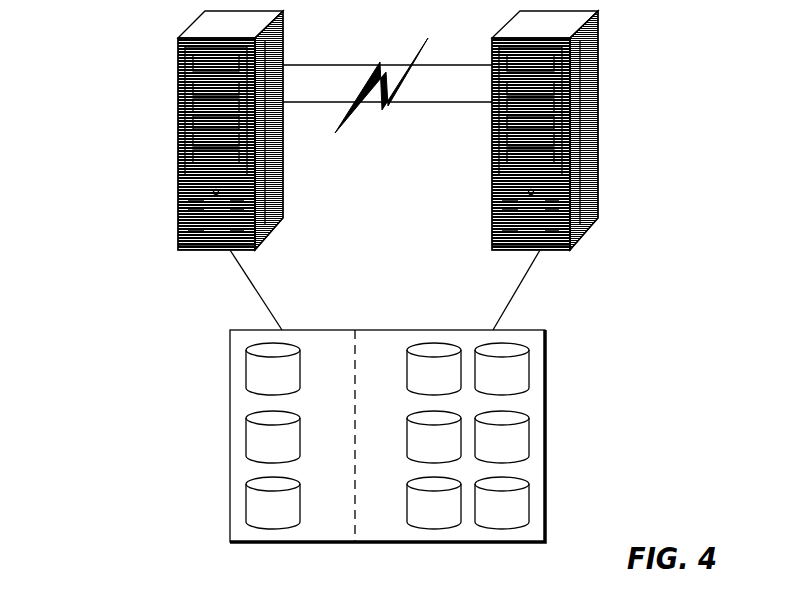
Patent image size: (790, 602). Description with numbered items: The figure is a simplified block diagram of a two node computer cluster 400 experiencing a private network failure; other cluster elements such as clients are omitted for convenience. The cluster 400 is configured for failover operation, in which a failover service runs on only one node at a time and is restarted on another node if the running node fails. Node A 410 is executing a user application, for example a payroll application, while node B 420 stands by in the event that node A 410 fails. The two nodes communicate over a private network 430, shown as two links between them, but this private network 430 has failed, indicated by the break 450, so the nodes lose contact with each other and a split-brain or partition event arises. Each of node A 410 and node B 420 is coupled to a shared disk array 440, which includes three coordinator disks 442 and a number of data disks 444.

The cluster 400 is at (124, 434).
The node A 410 is at (177, 122).
The node B 420 is at (598, 115).
The private network 430 is at (293, 65).
The disk array 440 is at (546, 398).
The coordinator disks 442 is at (341, 533).
The data disks 444 is at (398, 533).
The private network failure 450 is at (347, 123).